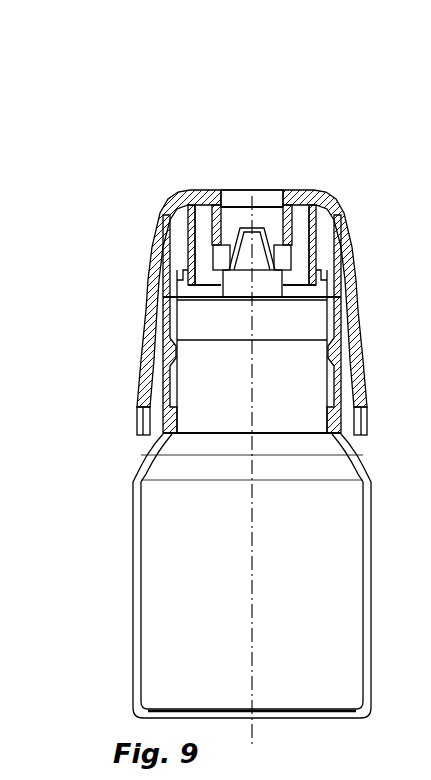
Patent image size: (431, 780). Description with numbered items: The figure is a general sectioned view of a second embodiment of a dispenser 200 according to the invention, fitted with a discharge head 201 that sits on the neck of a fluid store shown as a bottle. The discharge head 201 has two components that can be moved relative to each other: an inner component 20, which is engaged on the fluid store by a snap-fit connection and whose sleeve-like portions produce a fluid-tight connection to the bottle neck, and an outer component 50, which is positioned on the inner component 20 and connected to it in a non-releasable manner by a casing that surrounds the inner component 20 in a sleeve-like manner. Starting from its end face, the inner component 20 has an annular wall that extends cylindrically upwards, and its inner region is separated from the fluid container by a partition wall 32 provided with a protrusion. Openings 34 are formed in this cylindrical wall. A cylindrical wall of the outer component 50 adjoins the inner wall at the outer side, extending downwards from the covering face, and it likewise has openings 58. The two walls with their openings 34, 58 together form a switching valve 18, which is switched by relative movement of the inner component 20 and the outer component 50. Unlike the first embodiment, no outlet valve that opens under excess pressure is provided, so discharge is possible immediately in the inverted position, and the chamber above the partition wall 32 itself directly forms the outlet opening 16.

The dispenser 200 is at (122, 187).
The discharge head 201 is at (123, 386).
The openings 58 is at (203, 197).
The openings 34 is at (223, 206).
The outlet opening 16 is at (263, 250).
The partition wall 32 is at (299, 212).
The switching valve 18 is at (214, 272).
The outer component 50 is at (143, 416).
The inner component 20 is at (153, 413).